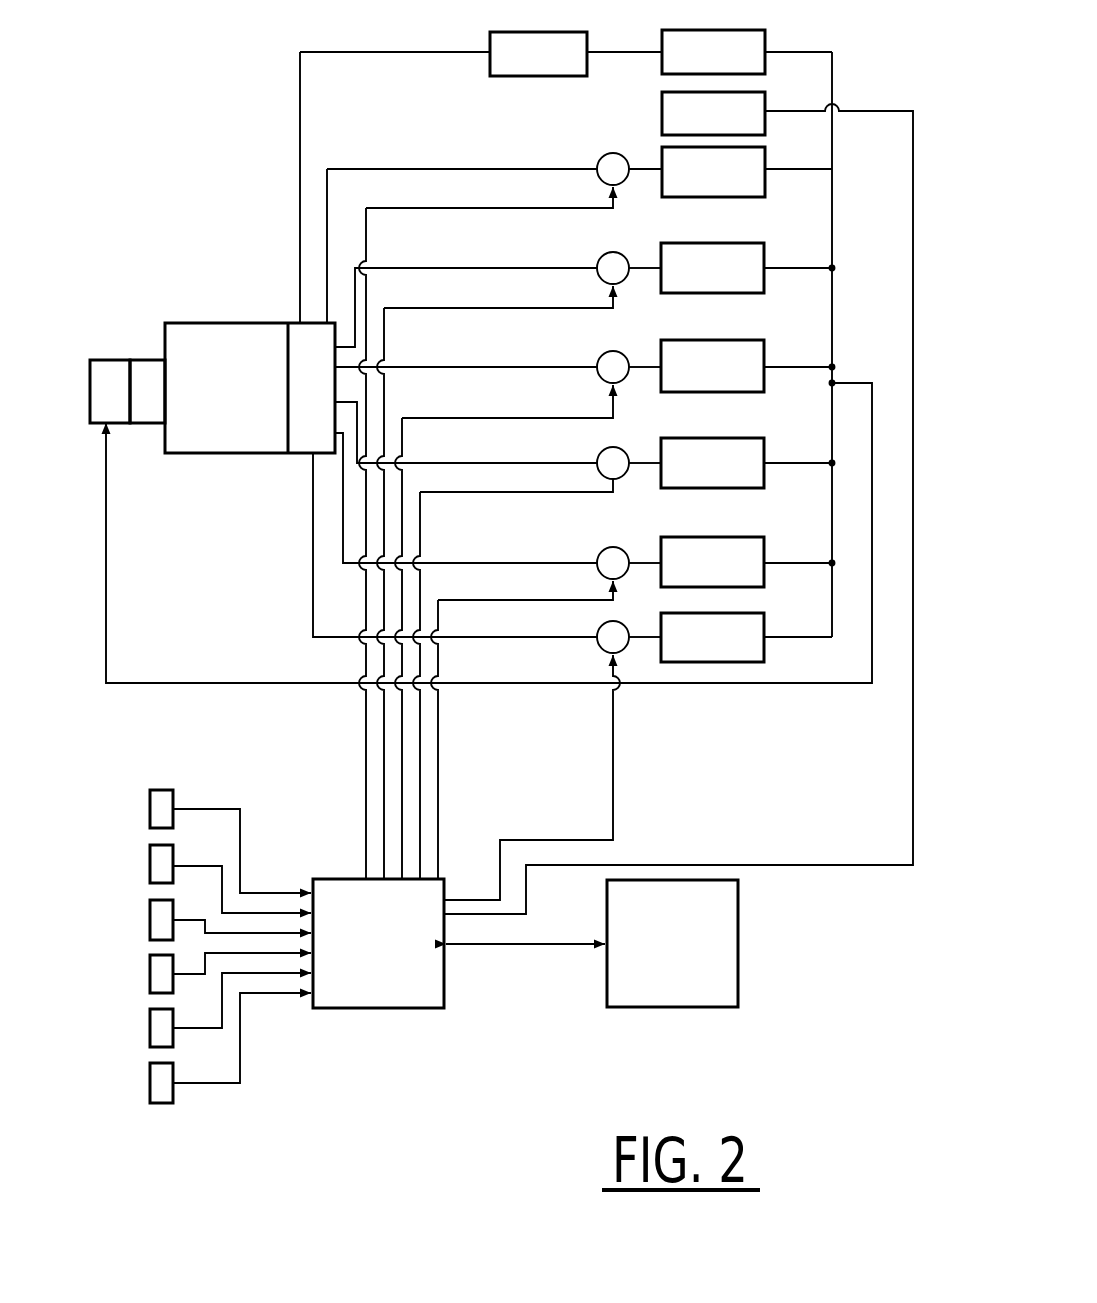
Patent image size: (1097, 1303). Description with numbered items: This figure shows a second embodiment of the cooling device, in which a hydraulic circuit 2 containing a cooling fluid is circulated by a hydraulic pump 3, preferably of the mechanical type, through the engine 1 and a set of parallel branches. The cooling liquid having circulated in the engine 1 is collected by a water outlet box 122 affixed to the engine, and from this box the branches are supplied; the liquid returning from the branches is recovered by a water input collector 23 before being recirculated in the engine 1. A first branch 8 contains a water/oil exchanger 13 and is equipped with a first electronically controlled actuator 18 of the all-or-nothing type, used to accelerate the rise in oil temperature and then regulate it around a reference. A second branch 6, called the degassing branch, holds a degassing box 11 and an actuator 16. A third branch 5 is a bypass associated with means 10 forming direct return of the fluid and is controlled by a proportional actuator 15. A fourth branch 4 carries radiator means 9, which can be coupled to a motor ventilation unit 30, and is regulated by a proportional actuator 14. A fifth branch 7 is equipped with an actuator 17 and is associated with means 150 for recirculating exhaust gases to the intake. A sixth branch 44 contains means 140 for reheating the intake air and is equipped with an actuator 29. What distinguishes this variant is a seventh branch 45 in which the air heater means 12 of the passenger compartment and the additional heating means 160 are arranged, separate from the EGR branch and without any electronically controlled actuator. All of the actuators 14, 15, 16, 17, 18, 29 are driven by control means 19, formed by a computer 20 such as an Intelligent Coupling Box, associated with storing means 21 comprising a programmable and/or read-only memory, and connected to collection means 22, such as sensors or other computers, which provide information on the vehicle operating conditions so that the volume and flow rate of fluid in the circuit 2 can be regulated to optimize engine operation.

The engine 1 is at (216, 402).
The hydraulic circuit 2 is at (838, 688).
The hydraulic pump 3 is at (139, 400).
The fourth branch 4 is at (775, 154).
The third branch 5 is at (774, 252).
The second branch 6 is at (774, 351).
The fifth branch 7 is at (778, 436).
The first branch 8 is at (775, 544).
The radiator means 9 is at (704, 187).
The bypass means 10 is at (695, 283).
The degassing box 11 is at (695, 381).
The air heater means 12 is at (555, 68).
The water/oil exchanger 13 is at (695, 577).
The electronically controlled actuator 14 is at (603, 155).
The electronically controlled actuator 15 is at (603, 254).
The electronically controlled actuator 16 is at (603, 353).
The electronically controlled actuator 17 is at (617, 468).
The first electronically controlled actuator 18 is at (610, 566).
The control means 19 is at (455, 1014).
The computer 20 is at (358, 958).
The storing means 21 is at (654, 958).
The collection means 22 is at (137, 838).
The water input collector 23 is at (95, 400).
The electronically controlled actuator 29 is at (611, 640).
The motor ventilation unit 30 is at (696, 128).
The sixth branch 44 is at (809, 344).
The seventh branch 45 is at (777, 40).
The water outlet box 122 is at (290, 400).
The intake air reheating means 140 is at (687, 652).
The exhaust gas recirculating means 150 is at (687, 478).
The additional heating means 160 is at (688, 67).